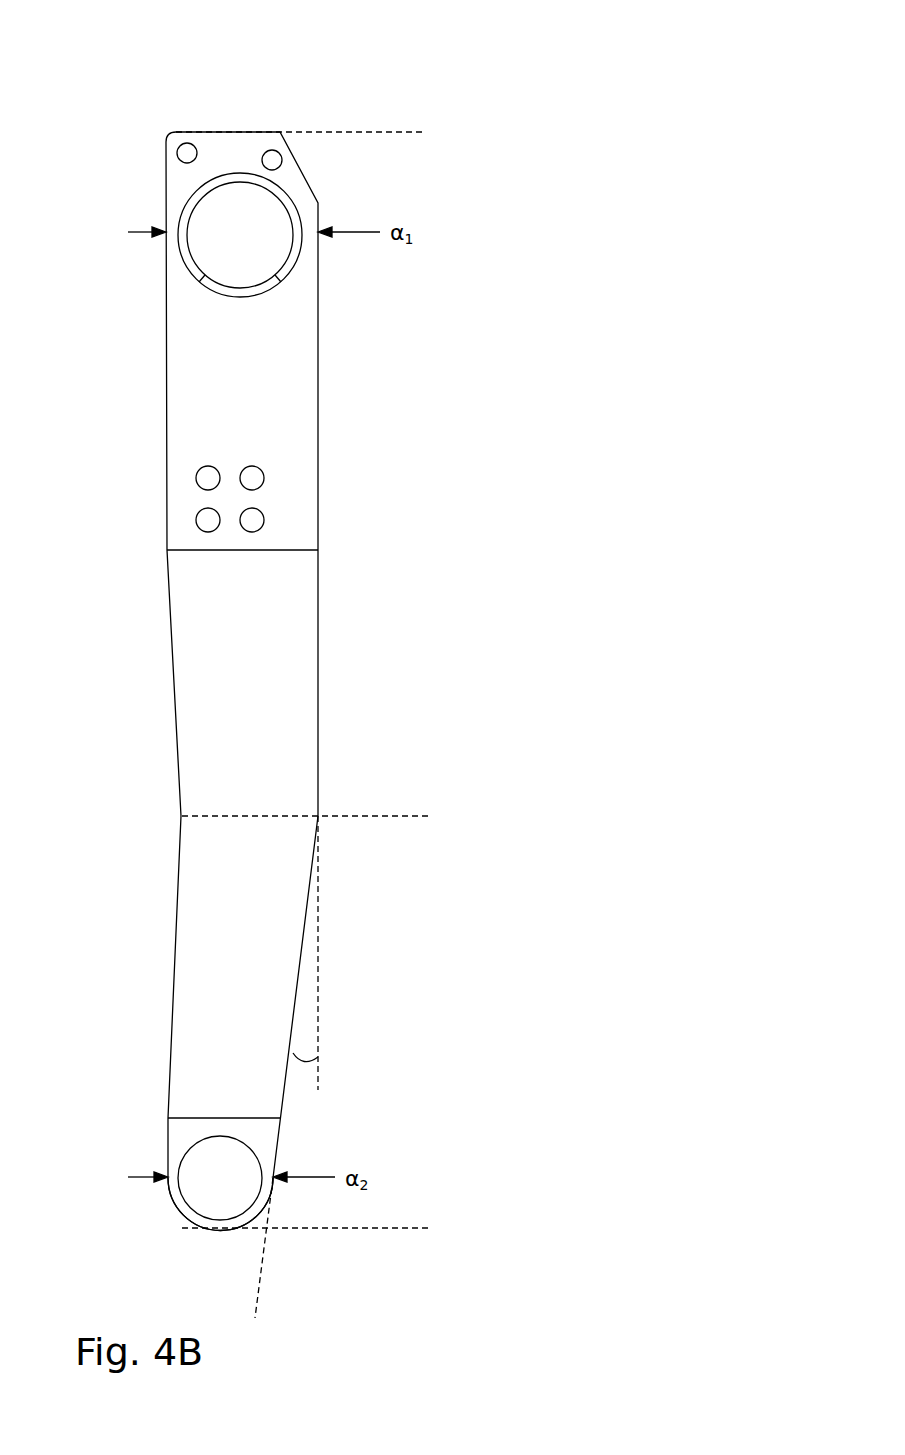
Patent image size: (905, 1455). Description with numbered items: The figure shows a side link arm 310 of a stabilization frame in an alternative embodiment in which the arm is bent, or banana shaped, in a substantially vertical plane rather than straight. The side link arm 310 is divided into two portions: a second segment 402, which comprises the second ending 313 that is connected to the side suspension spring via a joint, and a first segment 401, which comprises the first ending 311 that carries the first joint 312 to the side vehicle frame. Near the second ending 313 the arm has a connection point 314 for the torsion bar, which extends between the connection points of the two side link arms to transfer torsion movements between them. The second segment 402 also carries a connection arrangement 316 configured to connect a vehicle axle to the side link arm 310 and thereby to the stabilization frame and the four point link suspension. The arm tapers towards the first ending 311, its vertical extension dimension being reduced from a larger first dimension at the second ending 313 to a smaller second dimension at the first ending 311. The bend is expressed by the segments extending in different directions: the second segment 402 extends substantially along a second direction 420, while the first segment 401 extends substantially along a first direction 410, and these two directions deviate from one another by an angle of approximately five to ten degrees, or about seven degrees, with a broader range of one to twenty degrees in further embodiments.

The side link arm 310 is at (522, 60).
The second ending 313 is at (182, 130).
The connection point 314 is at (235, 235).
The connection arrangement 316 is at (232, 497).
The first joint 312 is at (205, 1167).
The first ending 311 is at (178, 1212).
The second segment 402 is at (437, 132).
The first segment 401 is at (437, 816).
The second direction 420 is at (318, 975).
The first direction 410 is at (262, 1260).